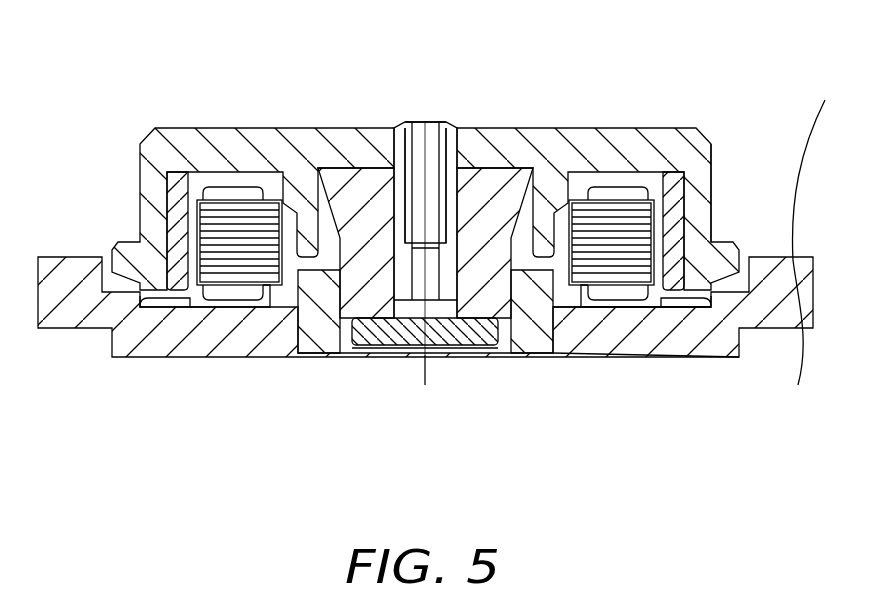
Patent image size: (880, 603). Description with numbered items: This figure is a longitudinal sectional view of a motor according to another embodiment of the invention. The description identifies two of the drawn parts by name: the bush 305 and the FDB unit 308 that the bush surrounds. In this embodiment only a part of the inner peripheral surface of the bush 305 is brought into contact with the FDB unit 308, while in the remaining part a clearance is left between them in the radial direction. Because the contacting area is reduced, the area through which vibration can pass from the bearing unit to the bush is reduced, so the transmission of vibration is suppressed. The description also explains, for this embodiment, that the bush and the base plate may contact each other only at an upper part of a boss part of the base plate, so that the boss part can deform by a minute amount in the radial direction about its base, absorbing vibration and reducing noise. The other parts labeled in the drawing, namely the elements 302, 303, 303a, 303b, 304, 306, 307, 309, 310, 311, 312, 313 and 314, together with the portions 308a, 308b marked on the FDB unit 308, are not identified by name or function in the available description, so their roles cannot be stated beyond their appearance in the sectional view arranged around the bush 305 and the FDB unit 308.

The motor housing 302 is at (142, 131).
The base plate 303 is at (27, 100).
The base plate upper surface 303a is at (600, 320).
The base plate lower surface 303b is at (650, 325).
The cover 304 is at (727, 187).
The bush 305 is at (312, 300).
The coil 306 is at (228, 243).
The stator core 307 is at (183, 243).
The FDB unit 308 is at (482, 354).
The shaft bore portion 308a is at (460, 173).
The shaft outer portion 308b is at (500, 165).
The shaft end 309 is at (403, 122).
The bearing holder 310 is at (368, 240).
The rotation axis 311 is at (425, 385).
The bearing 312 is at (382, 335).
The thrust washer 313 is at (545, 335).
The mounting portion 314 is at (722, 300).